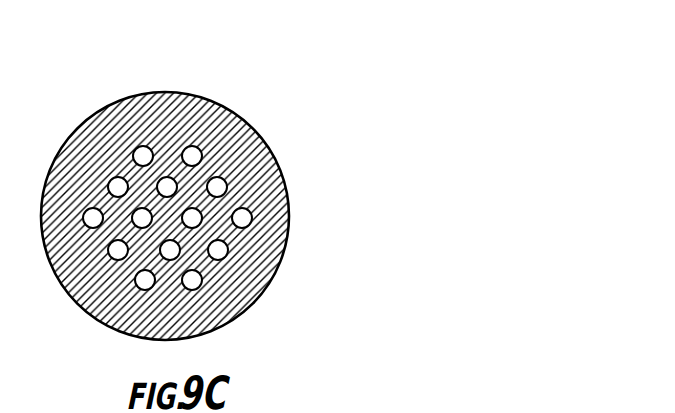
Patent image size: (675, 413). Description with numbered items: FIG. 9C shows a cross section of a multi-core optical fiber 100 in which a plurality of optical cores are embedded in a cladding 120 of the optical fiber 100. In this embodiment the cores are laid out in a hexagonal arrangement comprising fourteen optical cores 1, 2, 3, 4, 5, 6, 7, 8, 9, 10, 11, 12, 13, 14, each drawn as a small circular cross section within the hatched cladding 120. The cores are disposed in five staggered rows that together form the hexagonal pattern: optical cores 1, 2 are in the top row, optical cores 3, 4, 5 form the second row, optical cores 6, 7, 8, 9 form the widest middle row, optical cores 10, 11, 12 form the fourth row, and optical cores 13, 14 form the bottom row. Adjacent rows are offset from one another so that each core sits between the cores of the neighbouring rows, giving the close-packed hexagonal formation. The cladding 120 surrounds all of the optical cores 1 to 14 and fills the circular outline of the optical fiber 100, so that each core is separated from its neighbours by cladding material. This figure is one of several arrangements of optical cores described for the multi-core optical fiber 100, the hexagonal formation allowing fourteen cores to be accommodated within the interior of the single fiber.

The multi-core optical fiber 100 is at (200, 214).
The cladding 120 is at (258, 300).
The optical core 1 is at (138, 143).
The optical core 2 is at (185, 143).
The optical core 3 is at (109, 181).
The optical core 4 is at (163, 181).
The optical core 5 is at (210, 181).
The optical core 6 is at (83, 214).
The optical core 7 is at (133, 214).
The optical core 8 is at (182, 214).
The optical core 9 is at (234, 214).
The optical core 10 is at (101, 249).
The optical core 11 is at (157, 249).
The optical core 12 is at (233, 249).
The optical core 13 is at (131, 281).
The optical core 14 is at (210, 281).